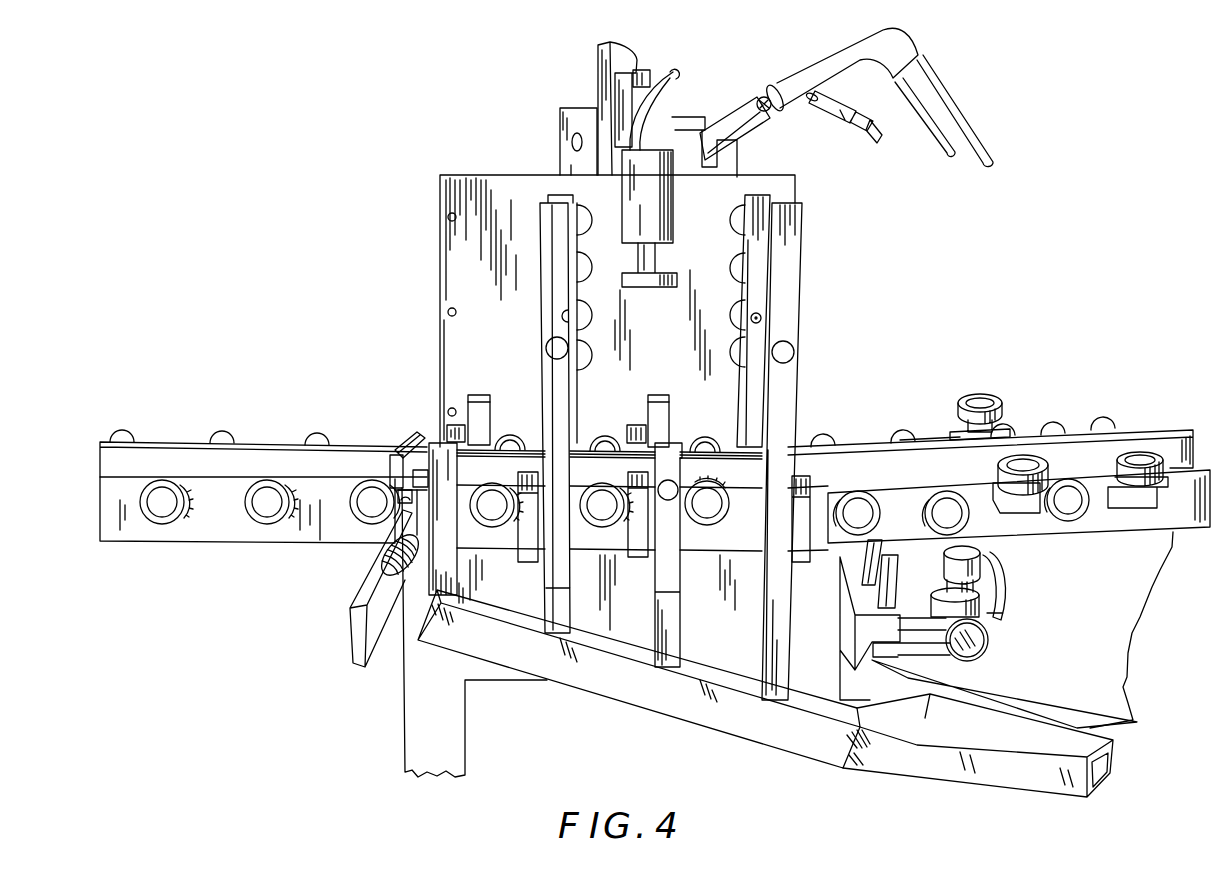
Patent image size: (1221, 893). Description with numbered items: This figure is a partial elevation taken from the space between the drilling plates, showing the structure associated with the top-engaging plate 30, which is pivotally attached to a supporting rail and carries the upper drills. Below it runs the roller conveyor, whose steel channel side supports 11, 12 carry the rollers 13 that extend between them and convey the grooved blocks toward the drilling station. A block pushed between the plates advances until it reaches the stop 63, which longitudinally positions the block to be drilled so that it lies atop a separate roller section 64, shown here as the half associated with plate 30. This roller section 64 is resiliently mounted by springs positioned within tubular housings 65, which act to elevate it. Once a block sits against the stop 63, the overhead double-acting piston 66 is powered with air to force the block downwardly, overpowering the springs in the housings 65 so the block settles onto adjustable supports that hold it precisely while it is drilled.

The side support 11 is at (158, 458).
The side support 12 is at (157, 535).
The rollers 13 is at (300, 438).
The top-engaging plate 30 is at (507, 196).
The stop 63 is at (403, 432).
The roller section 64 is at (590, 443).
The tubular housing 65 is at (528, 562).
The double-acting piston 66 is at (665, 200).